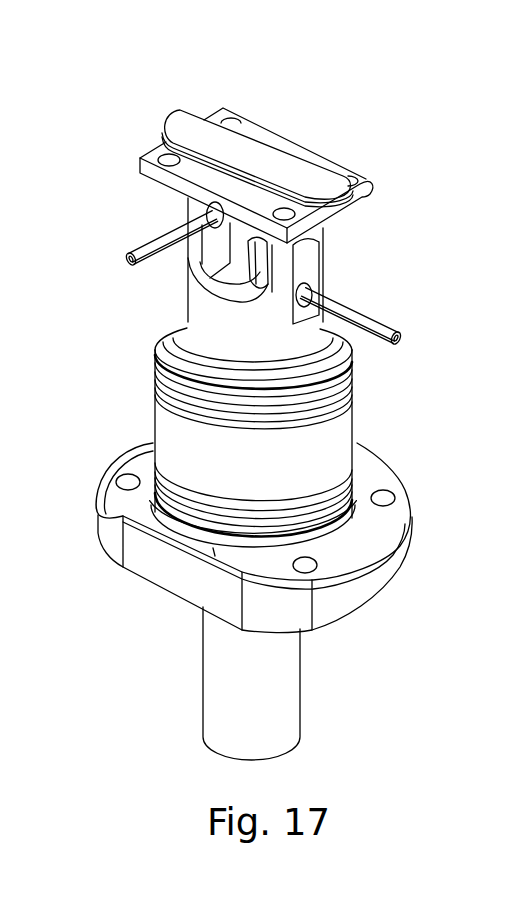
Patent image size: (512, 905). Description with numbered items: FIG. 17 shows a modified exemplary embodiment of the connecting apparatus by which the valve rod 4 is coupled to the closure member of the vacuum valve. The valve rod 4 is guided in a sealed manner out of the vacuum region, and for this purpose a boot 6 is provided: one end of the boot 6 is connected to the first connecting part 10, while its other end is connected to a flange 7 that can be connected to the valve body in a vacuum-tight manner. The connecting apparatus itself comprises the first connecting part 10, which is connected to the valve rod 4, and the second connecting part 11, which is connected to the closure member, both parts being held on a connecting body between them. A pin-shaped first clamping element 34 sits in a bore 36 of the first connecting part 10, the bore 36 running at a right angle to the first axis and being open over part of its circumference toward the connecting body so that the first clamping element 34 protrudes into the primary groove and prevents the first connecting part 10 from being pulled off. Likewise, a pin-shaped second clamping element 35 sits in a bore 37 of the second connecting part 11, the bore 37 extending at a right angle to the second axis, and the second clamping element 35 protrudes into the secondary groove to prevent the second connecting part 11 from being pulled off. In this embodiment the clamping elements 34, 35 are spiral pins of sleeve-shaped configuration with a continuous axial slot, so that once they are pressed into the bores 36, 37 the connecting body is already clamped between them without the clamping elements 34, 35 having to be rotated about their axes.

The valve rod 4 is at (248, 687).
The boot 6 is at (317, 452).
The flange 7 is at (362, 593).
The first connecting part 10 is at (207, 323).
The second connecting part 11 is at (310, 162).
The first clamping element 34 is at (377, 327).
The second clamping element 35 is at (153, 245).
The bore 36 is at (311, 291).
The bore 37 is at (210, 210).